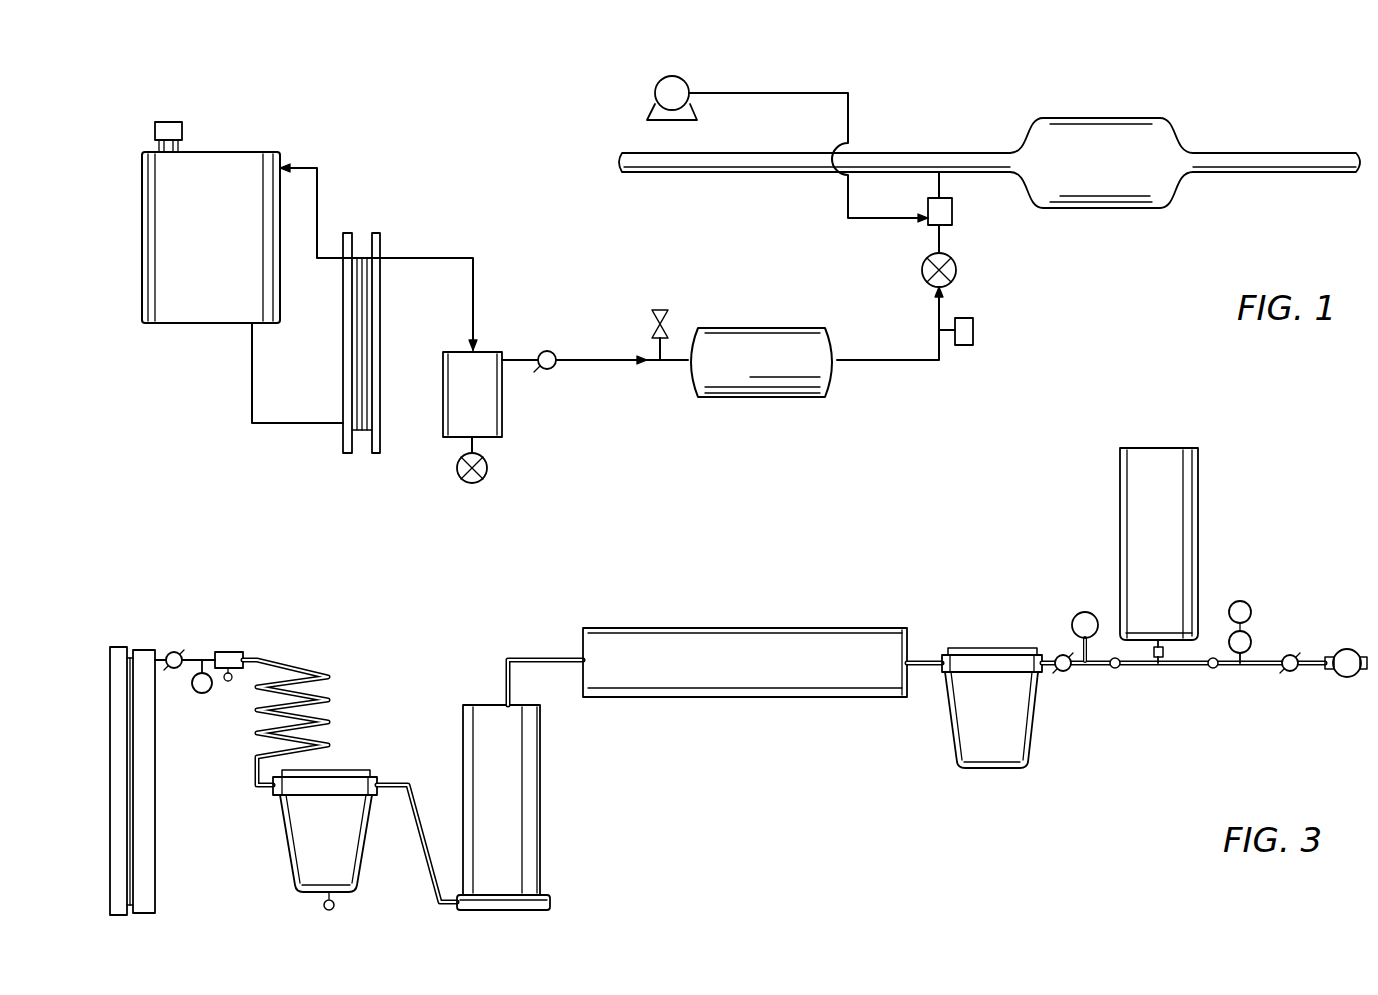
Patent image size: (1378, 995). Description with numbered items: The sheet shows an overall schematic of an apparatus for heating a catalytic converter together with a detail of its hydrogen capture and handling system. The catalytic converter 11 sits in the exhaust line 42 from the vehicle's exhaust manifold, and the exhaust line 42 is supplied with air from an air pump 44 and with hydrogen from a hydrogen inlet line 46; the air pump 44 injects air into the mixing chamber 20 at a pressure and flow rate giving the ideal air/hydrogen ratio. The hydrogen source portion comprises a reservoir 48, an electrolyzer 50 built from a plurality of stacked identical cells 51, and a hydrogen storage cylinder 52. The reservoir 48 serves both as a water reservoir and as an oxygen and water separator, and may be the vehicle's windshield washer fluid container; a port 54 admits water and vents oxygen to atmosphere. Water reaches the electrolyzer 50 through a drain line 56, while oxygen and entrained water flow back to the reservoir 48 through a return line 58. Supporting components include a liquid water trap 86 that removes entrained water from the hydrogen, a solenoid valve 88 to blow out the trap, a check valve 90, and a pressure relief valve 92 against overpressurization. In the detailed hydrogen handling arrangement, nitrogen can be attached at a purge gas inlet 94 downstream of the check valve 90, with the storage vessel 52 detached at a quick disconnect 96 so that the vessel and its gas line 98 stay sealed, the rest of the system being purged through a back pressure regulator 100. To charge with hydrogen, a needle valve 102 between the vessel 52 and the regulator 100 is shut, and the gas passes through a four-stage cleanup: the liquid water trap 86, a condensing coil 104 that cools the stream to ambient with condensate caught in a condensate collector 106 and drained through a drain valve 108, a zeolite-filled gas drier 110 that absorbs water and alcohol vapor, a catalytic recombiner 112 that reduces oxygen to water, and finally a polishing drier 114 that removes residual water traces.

In FIG. 1, the catalytic converter 11 is at (1157, 200).
In FIG. 1, the mixing chamber 20 is at (953, 213).
In FIG. 1, the exhaust line 42 is at (760, 164).
In FIG. 1, the air pump 44 is at (655, 95).
In FIG. 1, the hydrogen inlet line 46 is at (935, 182).
In FIG. 1, the reservoir 48 is at (242, 150).
In FIG. 1, the electrolyzer 50 is at (383, 418).
In FIG. 3, the electrolyzer 50 is at (155, 833).
In FIG. 1, the stacked identical cells 51 is at (357, 358).
In FIG. 1, the hydrogen storage cylinder 52 is at (769, 398).
In FIG. 3, the hydrogen storage cylinder 52 is at (1197, 482).
In FIG. 1, the port 54 is at (155, 131).
In FIG. 1, the drain line 56 is at (250, 385).
In FIG. 1, the return line 58 is at (318, 212).
In FIG. 1, the liquid water trap 86 is at (443, 372).
In FIG. 3, the liquid water trap 86 is at (227, 652).
In FIG. 1, the solenoid valve 88 is at (488, 472).
In FIG. 1, the check valve 90 is at (552, 350).
In FIG. 3, the check valve 90 is at (175, 652).
In FIG. 1, the pressure relief valve 92 is at (660, 308).
In FIG. 3, the purge gas inlet 94 is at (207, 691).
In FIG. 3, the quick disconnect 96 is at (1165, 653).
In FIG. 3, the gas line 98 is at (1142, 667).
In FIG. 3, the back pressure regulator 100 is at (1343, 648).
In FIG. 3, the needle valve 102 is at (1223, 667).
In FIG. 3, the condensing coil 104 is at (328, 697).
In FIG. 3, the condensate collector 106 is at (295, 847).
In FIG. 3, the drain valve 108 is at (337, 903).
In FIG. 3, the gas drier 110 is at (532, 822).
In FIG. 3, the catalytic recombiner 112 is at (757, 690).
In FIG. 3, the polishing drier 114 is at (960, 730).